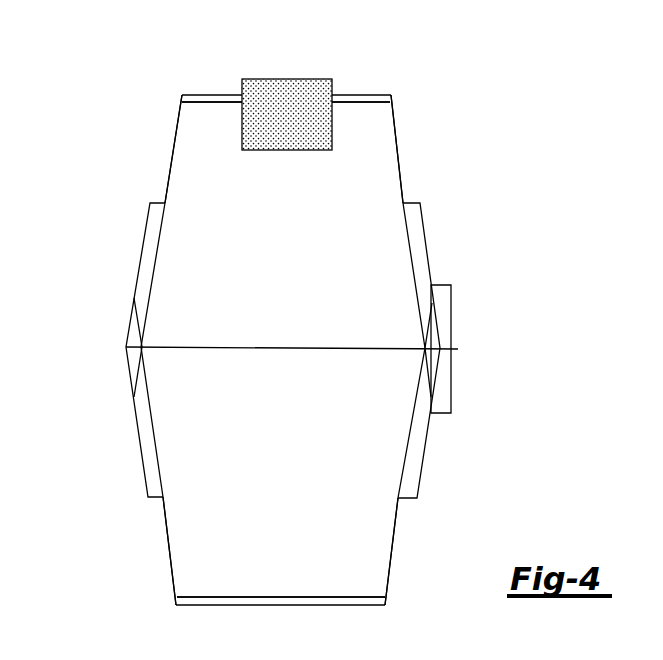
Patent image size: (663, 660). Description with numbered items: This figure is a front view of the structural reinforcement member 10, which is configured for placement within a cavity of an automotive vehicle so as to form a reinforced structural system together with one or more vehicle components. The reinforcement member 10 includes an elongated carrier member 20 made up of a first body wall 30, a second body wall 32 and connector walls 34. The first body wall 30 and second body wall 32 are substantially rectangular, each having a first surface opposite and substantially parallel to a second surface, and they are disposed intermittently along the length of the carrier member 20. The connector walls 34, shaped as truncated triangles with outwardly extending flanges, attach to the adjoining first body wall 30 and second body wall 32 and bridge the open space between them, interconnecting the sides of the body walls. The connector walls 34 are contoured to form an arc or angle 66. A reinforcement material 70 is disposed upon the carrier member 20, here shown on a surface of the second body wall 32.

The structural reinforcement member 10 is at (495, 63).
The carrier member 20 is at (380, 134).
The first body wall 30 is at (276, 480).
The second body wall 32 is at (277, 261).
The connector wall 34 is at (147, 252).
The arc or angle 66 is at (127, 347).
The reinforcement material 70 is at (306, 90).